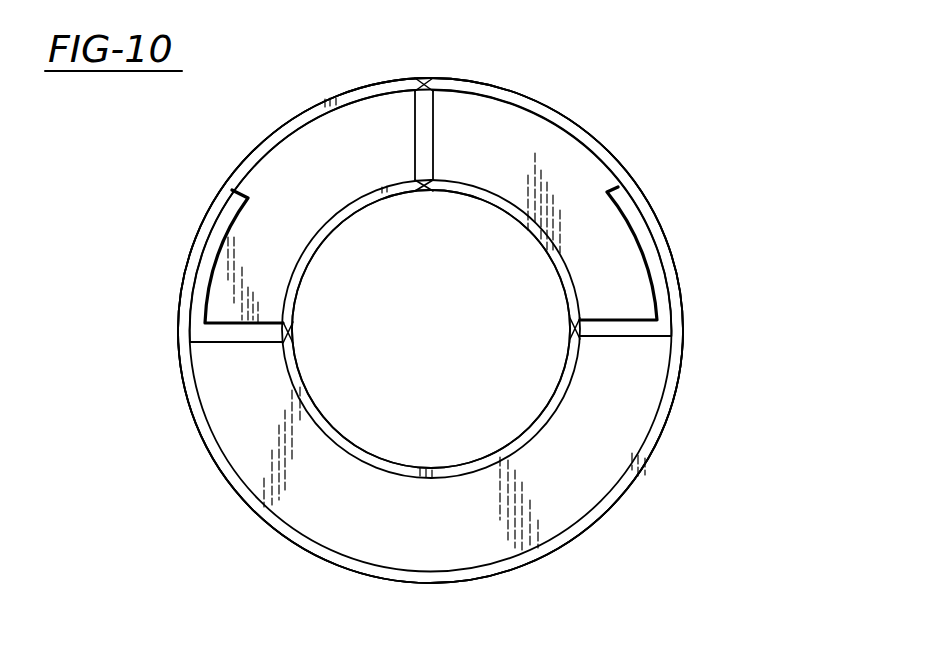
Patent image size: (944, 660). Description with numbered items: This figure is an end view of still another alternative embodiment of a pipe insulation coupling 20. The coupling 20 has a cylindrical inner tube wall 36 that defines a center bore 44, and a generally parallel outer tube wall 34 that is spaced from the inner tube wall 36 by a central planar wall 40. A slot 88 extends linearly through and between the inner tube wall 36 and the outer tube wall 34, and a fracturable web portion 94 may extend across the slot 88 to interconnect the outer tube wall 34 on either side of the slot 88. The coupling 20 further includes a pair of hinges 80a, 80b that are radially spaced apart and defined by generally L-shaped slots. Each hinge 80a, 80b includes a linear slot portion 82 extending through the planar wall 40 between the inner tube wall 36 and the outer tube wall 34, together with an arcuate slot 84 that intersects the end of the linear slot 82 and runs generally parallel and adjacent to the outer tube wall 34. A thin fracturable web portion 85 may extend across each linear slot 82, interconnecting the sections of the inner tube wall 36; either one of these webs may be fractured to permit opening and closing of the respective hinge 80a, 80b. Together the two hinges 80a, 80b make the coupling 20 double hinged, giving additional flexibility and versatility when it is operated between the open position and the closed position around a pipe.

The pipe insulation coupling 20 is at (646, 82).
The outer tube wall 34 is at (363, 580).
The inner tube wall 36 is at (527, 438).
The central planar wall 40 is at (448, 542).
The center bore 44 is at (358, 447).
The hinge 80a is at (716, 286).
The hinge 80b is at (155, 322).
The linear slot portion 82 is at (263, 342).
The arcuate slot 84 is at (214, 259).
The thin fracturable web portion 85 is at (288, 331).
The slot 88 is at (424, 175).
The fracturable web portion 94 is at (430, 77).